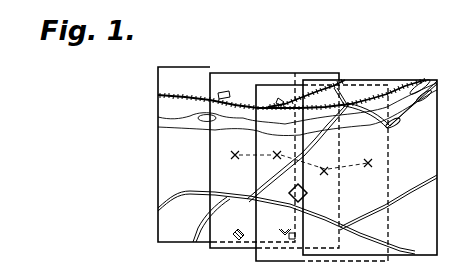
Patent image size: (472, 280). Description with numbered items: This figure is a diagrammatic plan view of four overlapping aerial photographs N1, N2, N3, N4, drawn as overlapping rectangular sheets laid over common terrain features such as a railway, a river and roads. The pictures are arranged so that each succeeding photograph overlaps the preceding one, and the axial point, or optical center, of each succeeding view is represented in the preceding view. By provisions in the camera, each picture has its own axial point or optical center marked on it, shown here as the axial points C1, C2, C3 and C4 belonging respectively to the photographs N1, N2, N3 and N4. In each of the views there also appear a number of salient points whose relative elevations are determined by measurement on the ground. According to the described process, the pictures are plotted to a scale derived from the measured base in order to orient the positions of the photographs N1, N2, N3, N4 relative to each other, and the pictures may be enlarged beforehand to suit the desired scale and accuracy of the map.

The aerial photograph N1 is at (179, 68).
The aerial photograph N2 is at (247, 73).
The aerial photograph N3 is at (283, 84).
The aerial photograph N4 is at (368, 80).
The axial point C1 is at (247, 167).
The axial point C2 is at (291, 167).
The axial point C3 is at (342, 182).
The axial point C4 is at (362, 179).